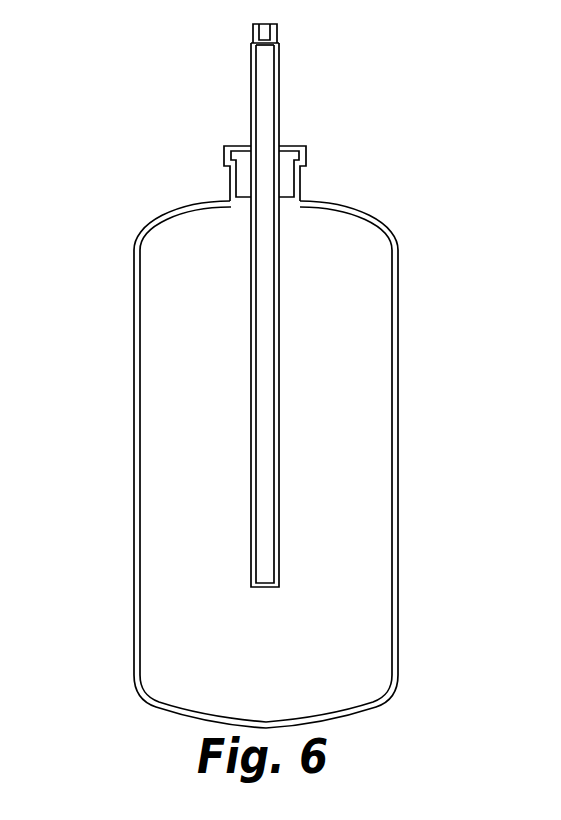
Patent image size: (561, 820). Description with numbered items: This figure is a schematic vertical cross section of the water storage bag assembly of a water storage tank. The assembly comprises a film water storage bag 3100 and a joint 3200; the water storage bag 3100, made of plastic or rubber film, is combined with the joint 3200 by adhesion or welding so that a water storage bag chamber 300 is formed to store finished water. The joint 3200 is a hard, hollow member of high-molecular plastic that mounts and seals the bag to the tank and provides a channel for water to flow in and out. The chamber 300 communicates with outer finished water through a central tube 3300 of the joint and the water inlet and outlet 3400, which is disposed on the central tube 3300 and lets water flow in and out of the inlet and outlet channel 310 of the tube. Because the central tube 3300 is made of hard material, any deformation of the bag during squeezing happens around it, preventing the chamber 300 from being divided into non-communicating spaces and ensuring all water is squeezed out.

The water storage bag chamber 300 is at (368, 490).
The inlet and outlet channel 310 is at (263, 33).
The water storage bag 3100 is at (398, 392).
The joint 3200 is at (307, 158).
The central tube 3300 is at (252, 292).
The water inlet and outlet 3400 is at (258, 34).